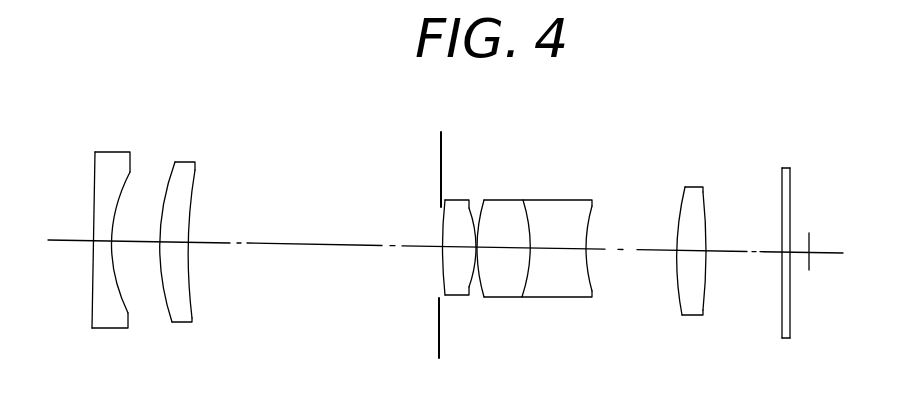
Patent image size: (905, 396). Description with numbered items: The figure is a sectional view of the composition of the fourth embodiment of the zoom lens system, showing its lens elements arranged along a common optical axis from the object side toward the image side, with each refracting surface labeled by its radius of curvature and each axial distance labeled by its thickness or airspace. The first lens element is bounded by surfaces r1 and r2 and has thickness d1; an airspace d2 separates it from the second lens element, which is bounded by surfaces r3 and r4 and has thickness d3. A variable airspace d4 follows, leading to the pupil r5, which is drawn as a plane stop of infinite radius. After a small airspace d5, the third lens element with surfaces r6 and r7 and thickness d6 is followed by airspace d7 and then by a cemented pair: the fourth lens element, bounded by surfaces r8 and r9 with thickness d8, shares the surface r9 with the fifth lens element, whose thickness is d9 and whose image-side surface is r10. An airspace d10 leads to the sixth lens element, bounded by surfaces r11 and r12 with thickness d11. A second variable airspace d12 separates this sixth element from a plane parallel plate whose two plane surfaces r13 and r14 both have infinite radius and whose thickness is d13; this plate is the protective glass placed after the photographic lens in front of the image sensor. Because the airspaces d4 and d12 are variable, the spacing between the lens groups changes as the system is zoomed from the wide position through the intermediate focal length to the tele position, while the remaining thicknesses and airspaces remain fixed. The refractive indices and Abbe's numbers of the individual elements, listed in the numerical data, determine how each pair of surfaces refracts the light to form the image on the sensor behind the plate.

The radius of curvature of first lens surface r1 is at (95, 170).
The radius of curvature of second lens surface r2 is at (117, 183).
The radius of curvature of third lens surface r3 is at (170, 178).
The radius of curvature of fourth lens surface r4 is at (195, 190).
The pupil surface r5 is at (440, 160).
The radius of curvature of sixth lens surface r6 is at (452, 247).
The radius of curvature of seventh lens surface r7 is at (470, 208).
The radius of curvature of eighth lens surface r8 is at (480, 203).
The radius of curvature of ninth lens surface r9 is at (532, 218).
The radius of curvature of tenth lens surface r10 is at (588, 232).
The radius of curvature of eleventh lens surface r11 is at (682, 204).
The radius of curvature of twelfth lens surface r12 is at (707, 204).
The radius of curvature of thirteenth surface r13 is at (781, 190).
The radius of curvature of fourteenth surface r14 is at (798, 197).
The thickness of first lens element d1 is at (100, 242).
The airspace between first and second lens elements d2 is at (135, 243).
The thickness of second lens element d3 is at (177, 243).
The variable airspace between second lens element and pupil d4 is at (305, 246).
The airspace between pupil and third lens element d5 is at (443, 248).
The thickness of third lens element d6 is at (452, 248).
The airspace between third and fourth lens elements d7 is at (486, 248).
The thickness of fourth lens element d8 is at (507, 248).
The thickness of fifth lens element d9 is at (557, 250).
The airspace between fifth and sixth lens elements d10 is at (637, 250).
The thickness of sixth lens element d11 is at (691, 251).
The variable airspace between sixth lens element and plane parallel plate d12 is at (728, 252).
The thickness of plane parallel plate d13 is at (783, 256).